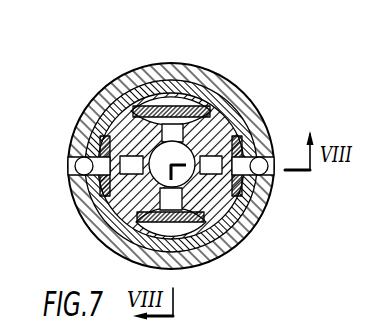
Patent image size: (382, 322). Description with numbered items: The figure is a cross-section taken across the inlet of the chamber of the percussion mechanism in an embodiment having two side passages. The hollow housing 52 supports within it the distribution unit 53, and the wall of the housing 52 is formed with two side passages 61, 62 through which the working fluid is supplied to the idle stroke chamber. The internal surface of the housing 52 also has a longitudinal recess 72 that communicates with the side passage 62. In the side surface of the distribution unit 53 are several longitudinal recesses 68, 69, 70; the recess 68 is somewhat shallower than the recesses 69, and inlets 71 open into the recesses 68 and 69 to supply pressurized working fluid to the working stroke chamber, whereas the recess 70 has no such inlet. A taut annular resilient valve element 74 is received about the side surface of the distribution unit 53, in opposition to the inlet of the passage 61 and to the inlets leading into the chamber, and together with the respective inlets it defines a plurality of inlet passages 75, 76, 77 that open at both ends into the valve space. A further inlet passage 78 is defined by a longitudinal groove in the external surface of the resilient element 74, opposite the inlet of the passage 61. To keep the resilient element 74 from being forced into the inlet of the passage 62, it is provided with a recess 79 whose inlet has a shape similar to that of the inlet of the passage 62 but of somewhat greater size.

The hollow housing 52 is at (168, 76).
The distribution unit 53 is at (108, 125).
The side passage 61 is at (72, 160).
The side passage 62 is at (272, 173).
The longitudinal recess 68 is at (92, 210).
The longitudinal recess 69 is at (196, 268).
The longitudinal recess 70 is at (241, 239).
The inlet 71 is at (232, 102).
The longitudinal recess 72 is at (253, 124).
The resilient valve element 74 is at (98, 150).
The inlet passage 75 is at (88, 125).
The inlet passage 76 is at (205, 95).
The inlet passage 77 is at (249, 151).
The inlet passage 78 is at (80, 186).
The recess 79 is at (258, 212).